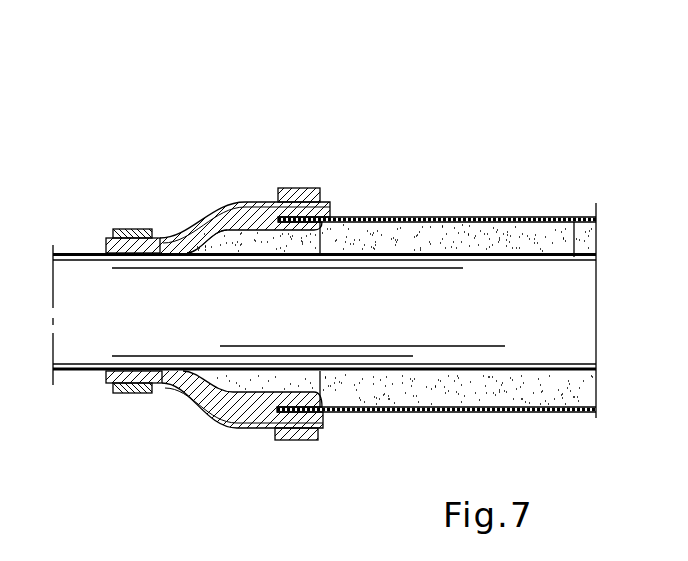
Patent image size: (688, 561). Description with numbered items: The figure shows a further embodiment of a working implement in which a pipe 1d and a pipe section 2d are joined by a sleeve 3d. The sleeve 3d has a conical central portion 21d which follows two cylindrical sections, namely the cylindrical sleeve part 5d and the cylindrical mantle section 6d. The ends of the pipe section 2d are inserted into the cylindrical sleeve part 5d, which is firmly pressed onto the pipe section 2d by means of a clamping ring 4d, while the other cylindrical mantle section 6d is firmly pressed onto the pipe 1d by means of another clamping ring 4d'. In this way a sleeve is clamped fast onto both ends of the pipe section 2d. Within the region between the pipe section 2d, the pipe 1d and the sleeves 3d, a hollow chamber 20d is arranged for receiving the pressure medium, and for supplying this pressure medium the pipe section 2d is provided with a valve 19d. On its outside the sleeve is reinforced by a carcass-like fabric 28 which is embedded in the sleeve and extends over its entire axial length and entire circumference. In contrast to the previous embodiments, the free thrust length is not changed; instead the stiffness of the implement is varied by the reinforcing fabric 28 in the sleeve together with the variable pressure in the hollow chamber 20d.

The pipe 1d is at (573, 217).
The pipe section 2d is at (430, 217).
The sleeve 3d is at (240, 196).
The clamping ring 4d is at (299, 458).
The clamping ring 4d' is at (134, 409).
The cylindrical sleeve part 5d is at (306, 212).
The cylindrical mantle section 6d is at (126, 229).
The valve 19d is at (483, 245).
The hollow chamber 20d is at (548, 392).
The conical central portion 21d is at (194, 240).
The carcass-like fabric 28 is at (235, 418).